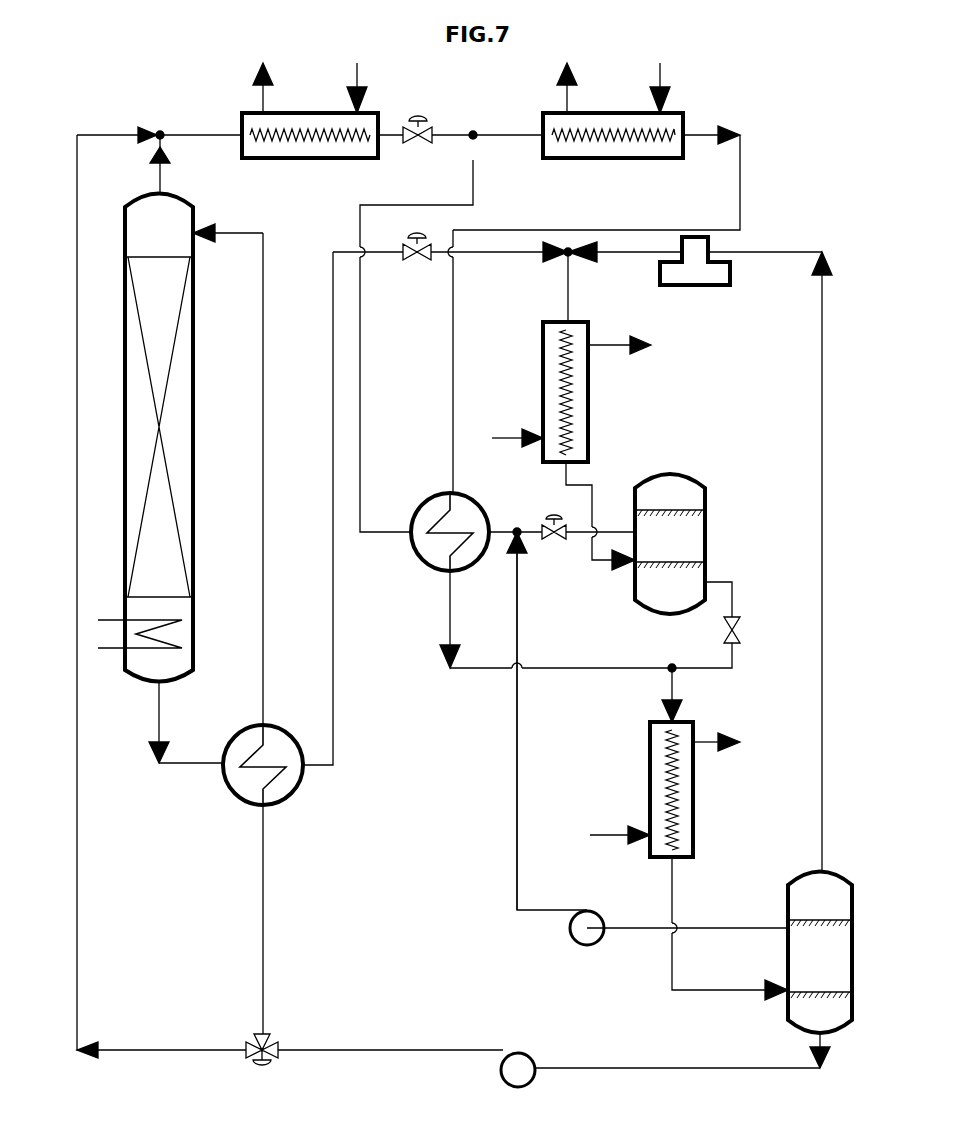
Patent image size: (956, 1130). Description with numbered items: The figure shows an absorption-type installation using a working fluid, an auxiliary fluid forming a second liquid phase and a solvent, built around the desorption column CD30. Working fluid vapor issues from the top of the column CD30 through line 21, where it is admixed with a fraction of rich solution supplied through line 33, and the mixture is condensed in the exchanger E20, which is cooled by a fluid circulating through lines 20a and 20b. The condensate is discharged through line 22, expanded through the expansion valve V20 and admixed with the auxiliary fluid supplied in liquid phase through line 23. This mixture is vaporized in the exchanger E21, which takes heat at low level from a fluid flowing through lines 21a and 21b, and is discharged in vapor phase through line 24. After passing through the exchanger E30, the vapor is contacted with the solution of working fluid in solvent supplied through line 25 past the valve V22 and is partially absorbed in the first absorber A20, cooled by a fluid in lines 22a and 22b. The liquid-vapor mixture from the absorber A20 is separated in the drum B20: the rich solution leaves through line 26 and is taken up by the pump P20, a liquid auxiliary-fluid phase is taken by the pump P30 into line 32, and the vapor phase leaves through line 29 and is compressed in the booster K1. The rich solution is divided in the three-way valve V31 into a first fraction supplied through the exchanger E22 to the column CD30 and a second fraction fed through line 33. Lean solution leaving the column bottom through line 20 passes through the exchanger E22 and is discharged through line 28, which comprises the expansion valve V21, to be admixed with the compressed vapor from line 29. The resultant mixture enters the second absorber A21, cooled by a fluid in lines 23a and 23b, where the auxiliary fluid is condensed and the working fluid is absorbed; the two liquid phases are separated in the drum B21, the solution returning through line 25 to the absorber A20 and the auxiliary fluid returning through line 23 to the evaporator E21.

The line 20 is at (198, 768).
The line 20a is at (359, 86).
The line 20b is at (258, 78).
The line 21 is at (160, 176).
The line 21a is at (662, 80).
The line 21b is at (561, 73).
The line 22 is at (381, 133).
The line 22a is at (600, 838).
The line 22b is at (744, 742).
The line 23 is at (335, 292).
The line 23a is at (497, 440).
The line 23b is at (640, 352).
The line 24 is at (742, 170).
The line 25 is at (733, 671).
The line 26 is at (660, 1068).
The line 28 is at (530, 255).
The line 29 is at (795, 250).
The line 32 is at (516, 778).
The line 33 is at (78, 180).
The exchanger E20 is at (337, 158).
The exchanger E21 is at (615, 160).
The exchanger E22 is at (290, 740).
The exchanger E30 is at (434, 500).
The expansion valve V20 is at (422, 118).
The expansion valve V21 is at (406, 250).
The valve V22 is at (738, 622).
The three-way valve V31 is at (276, 1042).
The desorption column CD30 is at (194, 422).
The first absorber A20 is at (700, 830).
The second absorber A21 is at (588, 402).
The drum B20 is at (788, 882).
The drum B21 is at (707, 484).
The compressor K1 is at (692, 284).
The pump P20 is at (520, 1060).
The pump P30 is at (600, 918).